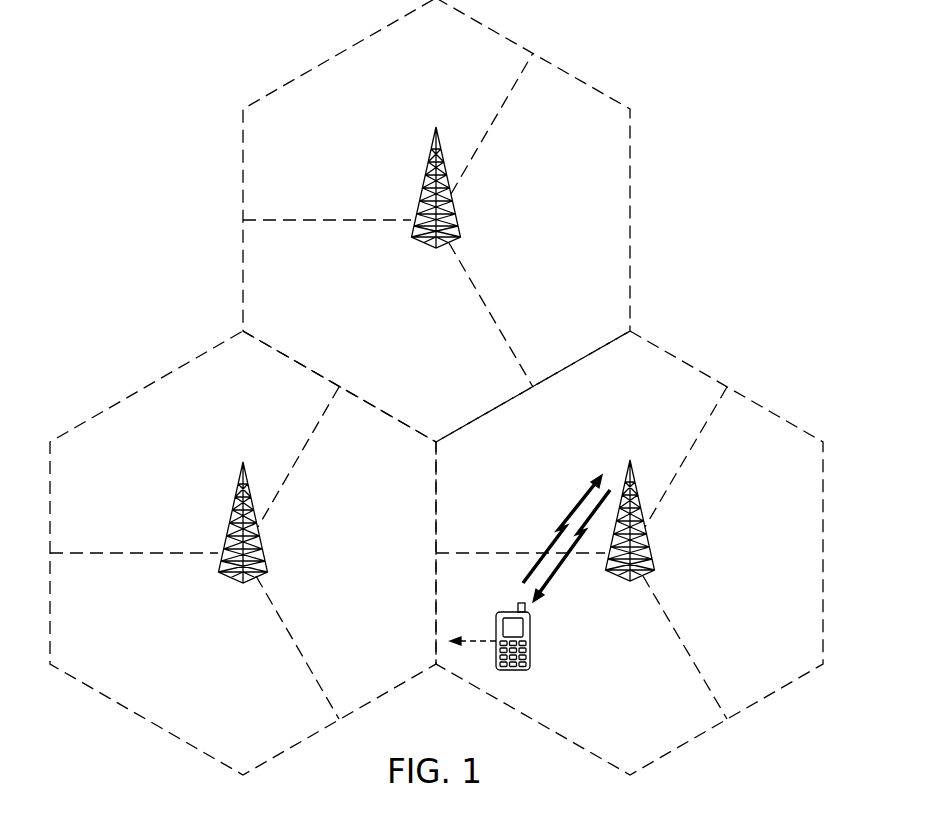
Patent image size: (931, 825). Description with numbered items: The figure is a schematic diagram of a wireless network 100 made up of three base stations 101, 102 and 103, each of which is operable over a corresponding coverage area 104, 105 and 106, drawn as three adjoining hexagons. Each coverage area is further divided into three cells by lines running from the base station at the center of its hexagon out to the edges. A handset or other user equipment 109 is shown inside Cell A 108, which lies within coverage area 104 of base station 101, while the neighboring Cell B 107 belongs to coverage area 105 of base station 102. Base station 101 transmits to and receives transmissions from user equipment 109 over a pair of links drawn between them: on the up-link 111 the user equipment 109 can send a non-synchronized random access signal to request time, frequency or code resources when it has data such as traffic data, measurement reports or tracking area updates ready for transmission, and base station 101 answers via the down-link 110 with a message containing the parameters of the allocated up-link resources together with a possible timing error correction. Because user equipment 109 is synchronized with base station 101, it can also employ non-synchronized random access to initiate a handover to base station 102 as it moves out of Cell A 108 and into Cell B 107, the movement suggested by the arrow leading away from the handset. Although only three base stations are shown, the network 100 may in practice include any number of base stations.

The wireless network 100 is at (266, 50).
The base station 101 is at (650, 538).
The base station 102 is at (232, 512).
The base station 103 is at (427, 178).
The coverage area 104 is at (695, 740).
The coverage area 105 is at (178, 740).
The coverage area 106 is at (562, 70).
The Cell B 107 is at (377, 576).
The Cell A 108 is at (648, 422).
The user equipment 109 is at (513, 608).
The down-link 110 is at (562, 560).
The up-link 111 is at (575, 505).